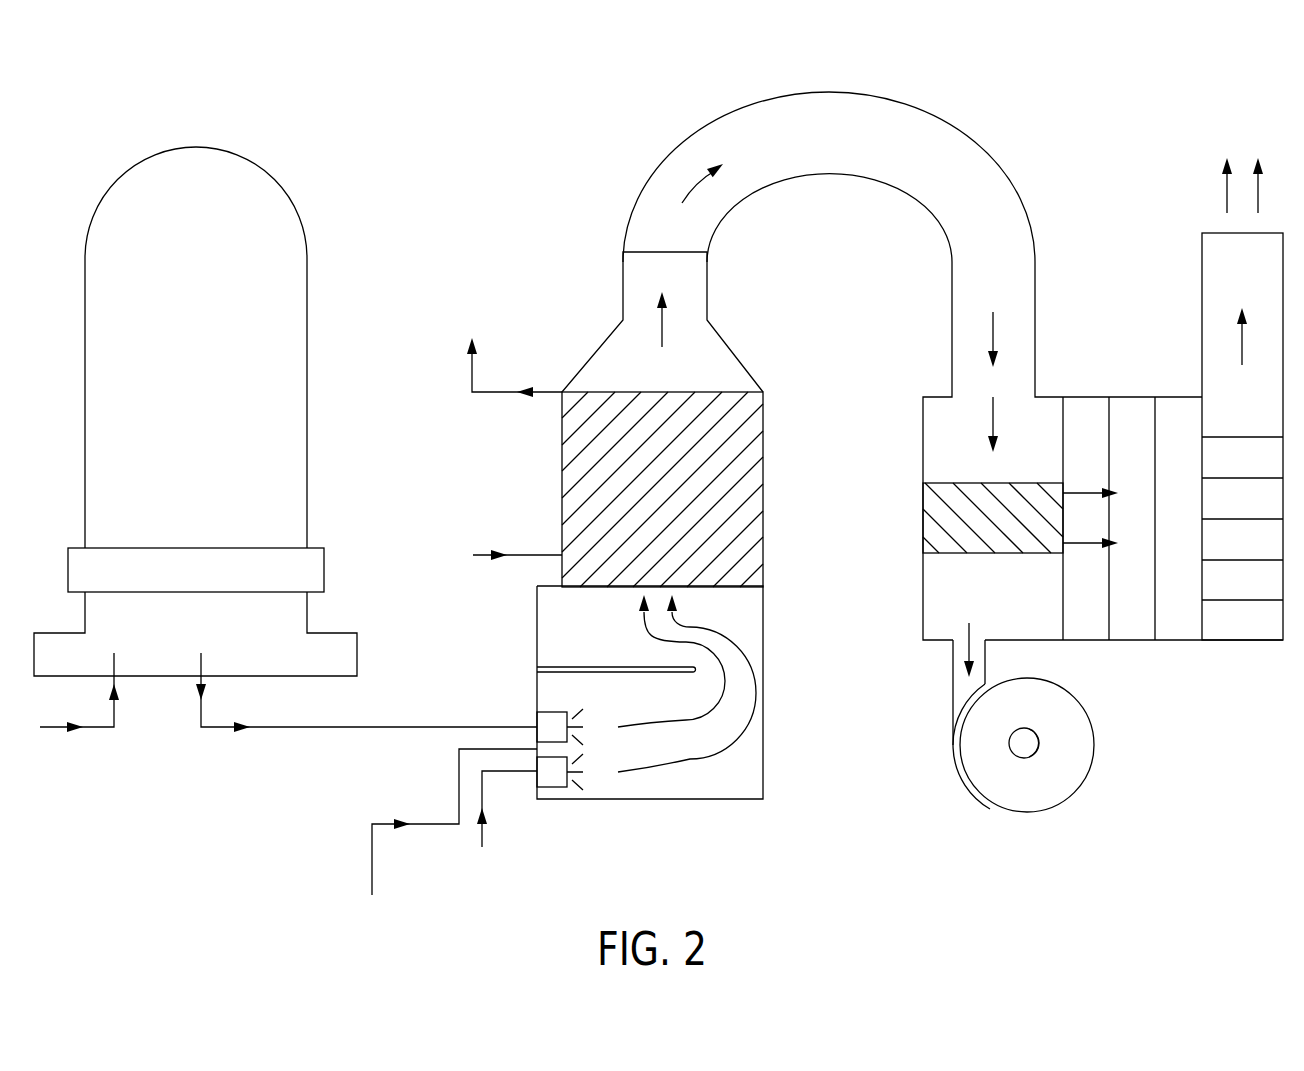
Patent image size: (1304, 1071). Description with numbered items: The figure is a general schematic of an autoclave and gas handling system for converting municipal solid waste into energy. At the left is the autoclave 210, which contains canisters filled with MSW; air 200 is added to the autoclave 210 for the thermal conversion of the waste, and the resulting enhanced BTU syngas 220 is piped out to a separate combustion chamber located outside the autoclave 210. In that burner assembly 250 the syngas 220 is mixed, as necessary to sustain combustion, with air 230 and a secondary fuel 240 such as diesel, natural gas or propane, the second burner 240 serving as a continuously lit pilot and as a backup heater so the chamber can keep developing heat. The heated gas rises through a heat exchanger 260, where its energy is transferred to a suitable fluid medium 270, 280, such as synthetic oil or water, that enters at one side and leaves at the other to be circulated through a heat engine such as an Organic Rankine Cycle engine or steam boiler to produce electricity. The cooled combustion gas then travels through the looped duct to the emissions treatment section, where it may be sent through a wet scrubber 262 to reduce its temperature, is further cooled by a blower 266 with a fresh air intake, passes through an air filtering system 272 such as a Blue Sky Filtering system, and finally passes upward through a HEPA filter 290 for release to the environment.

The air 200 is at (52, 729).
The autoclave 210 is at (201, 135).
The enhanced BTU syngas 220 is at (190, 687).
The air 230 is at (372, 858).
The secondary fuel 240 is at (482, 832).
The burner assembly 250 is at (536, 700).
The heat exchanger 260 is at (750, 493).
The wet scrubber 262 is at (925, 520).
The blower 266 is at (962, 772).
The fluid medium 270 is at (548, 543).
The air filtering system 272 is at (1157, 665).
The fluid medium 280 is at (557, 375).
The HEPA filter 290 is at (1186, 260).